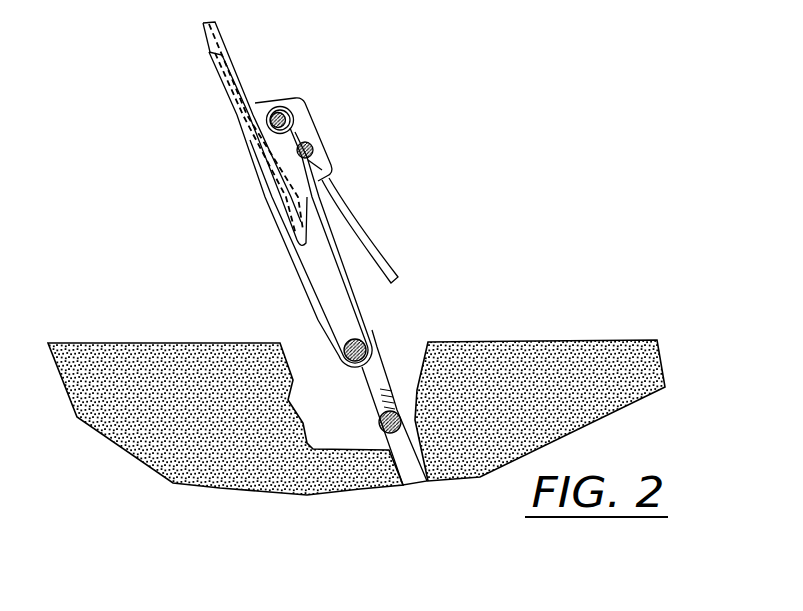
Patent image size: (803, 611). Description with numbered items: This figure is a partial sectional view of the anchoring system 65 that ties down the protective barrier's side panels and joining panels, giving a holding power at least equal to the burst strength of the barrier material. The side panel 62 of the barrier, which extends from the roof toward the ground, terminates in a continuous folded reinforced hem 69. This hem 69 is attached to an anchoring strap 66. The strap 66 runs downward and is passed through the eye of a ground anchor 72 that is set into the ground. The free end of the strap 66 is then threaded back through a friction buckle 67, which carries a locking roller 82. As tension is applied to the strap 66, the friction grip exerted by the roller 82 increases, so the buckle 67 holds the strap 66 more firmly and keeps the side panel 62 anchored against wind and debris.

The side panel 62 is at (240, 78).
The anchoring system 65 is at (388, 168).
The anchoring strap 66 is at (360, 316).
The friction buckle 67 is at (290, 99).
The folded reinforced hem 69 is at (297, 243).
The ground anchor 72 is at (393, 396).
The locking roller 82 is at (311, 152).